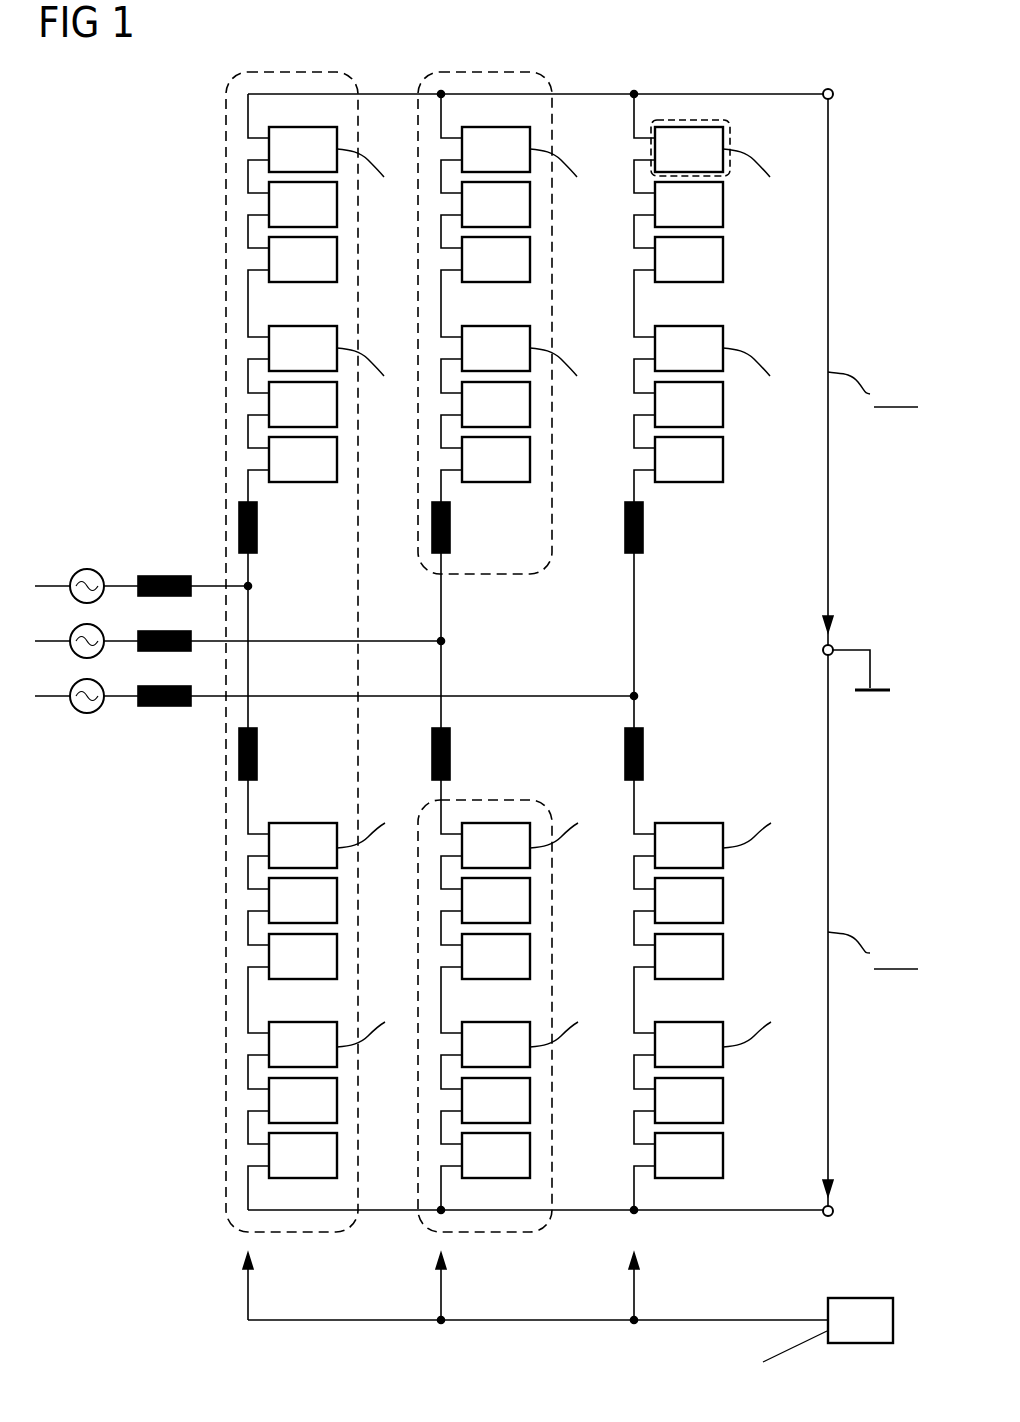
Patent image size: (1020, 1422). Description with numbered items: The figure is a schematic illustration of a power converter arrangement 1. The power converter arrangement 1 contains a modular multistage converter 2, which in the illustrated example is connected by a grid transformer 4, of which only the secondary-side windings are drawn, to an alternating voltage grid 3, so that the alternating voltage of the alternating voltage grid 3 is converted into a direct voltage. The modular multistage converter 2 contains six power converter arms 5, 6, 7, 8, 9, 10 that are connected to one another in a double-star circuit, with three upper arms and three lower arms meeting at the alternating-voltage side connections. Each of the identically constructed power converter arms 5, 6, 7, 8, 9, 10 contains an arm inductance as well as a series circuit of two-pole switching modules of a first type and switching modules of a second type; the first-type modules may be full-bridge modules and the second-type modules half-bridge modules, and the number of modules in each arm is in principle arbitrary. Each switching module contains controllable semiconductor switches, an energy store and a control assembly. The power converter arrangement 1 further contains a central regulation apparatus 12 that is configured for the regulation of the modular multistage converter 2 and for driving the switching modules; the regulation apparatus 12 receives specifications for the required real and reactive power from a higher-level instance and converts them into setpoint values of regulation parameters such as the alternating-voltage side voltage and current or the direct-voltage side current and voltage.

The power converter arrangement 1 is at (863, 265).
The modular multistage converter 2 is at (176, 222).
The alternating voltage grid 3 is at (50, 708).
The grid transformer 4 is at (160, 708).
The power converter arm 5 is at (248, 114).
The power converter arm 6 is at (441, 115).
The power converter arm 7 is at (634, 115).
The power converter arm 8 is at (248, 1190).
The power converter arm 9 is at (441, 1190).
The power converter arm 10 is at (634, 1190).
The central regulation apparatus 12 is at (848, 1298).